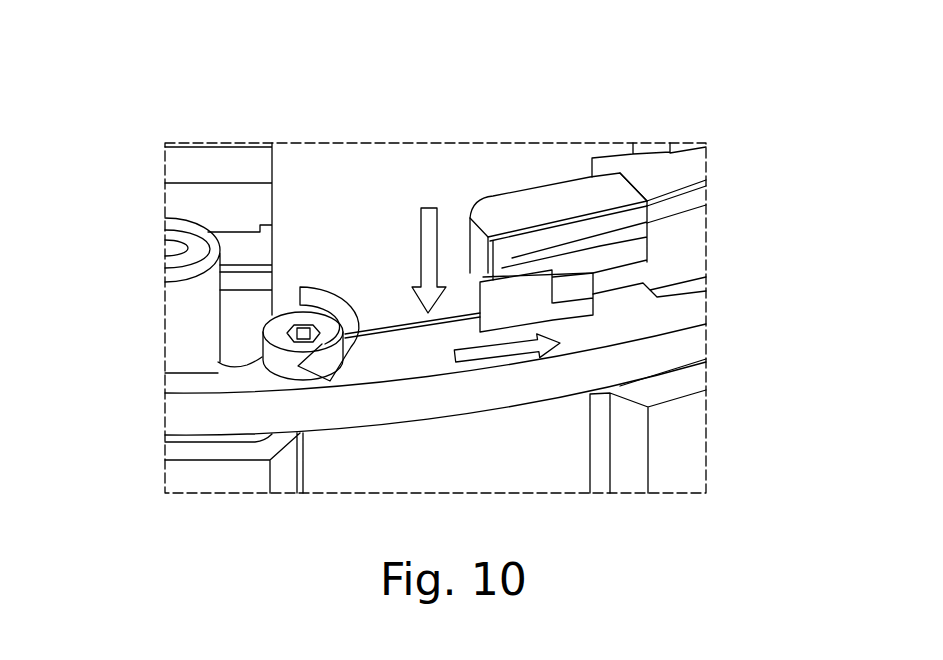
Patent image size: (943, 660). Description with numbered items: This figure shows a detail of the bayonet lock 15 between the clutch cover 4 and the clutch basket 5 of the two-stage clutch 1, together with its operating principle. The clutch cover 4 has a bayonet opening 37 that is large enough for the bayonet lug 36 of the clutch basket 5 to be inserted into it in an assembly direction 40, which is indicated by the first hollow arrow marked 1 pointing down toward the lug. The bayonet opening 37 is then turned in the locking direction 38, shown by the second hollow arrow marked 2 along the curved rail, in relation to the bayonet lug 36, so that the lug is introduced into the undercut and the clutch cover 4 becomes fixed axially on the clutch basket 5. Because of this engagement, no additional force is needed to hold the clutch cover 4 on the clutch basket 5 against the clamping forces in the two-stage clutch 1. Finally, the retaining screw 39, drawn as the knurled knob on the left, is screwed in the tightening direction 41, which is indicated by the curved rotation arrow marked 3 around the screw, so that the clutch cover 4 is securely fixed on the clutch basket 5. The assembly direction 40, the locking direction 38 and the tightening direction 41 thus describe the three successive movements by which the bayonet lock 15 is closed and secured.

The two-stage clutch 1 is at (423, 258).
The direction of movement 2 is at (494, 353).
The direction of rotation 3 is at (280, 327).
The clutch cover 4 is at (197, 410).
The clutch basket 5 is at (675, 458).
The bayonet lock 15 is at (555, 232).
The bayonet lug 36 is at (558, 202).
The bayonet opening 37 is at (635, 316).
The locking direction 38 is at (509, 442).
The retaining screw 39 is at (371, 378).
The assembly direction 40 is at (438, 171).
The tightening direction 41 is at (357, 345).